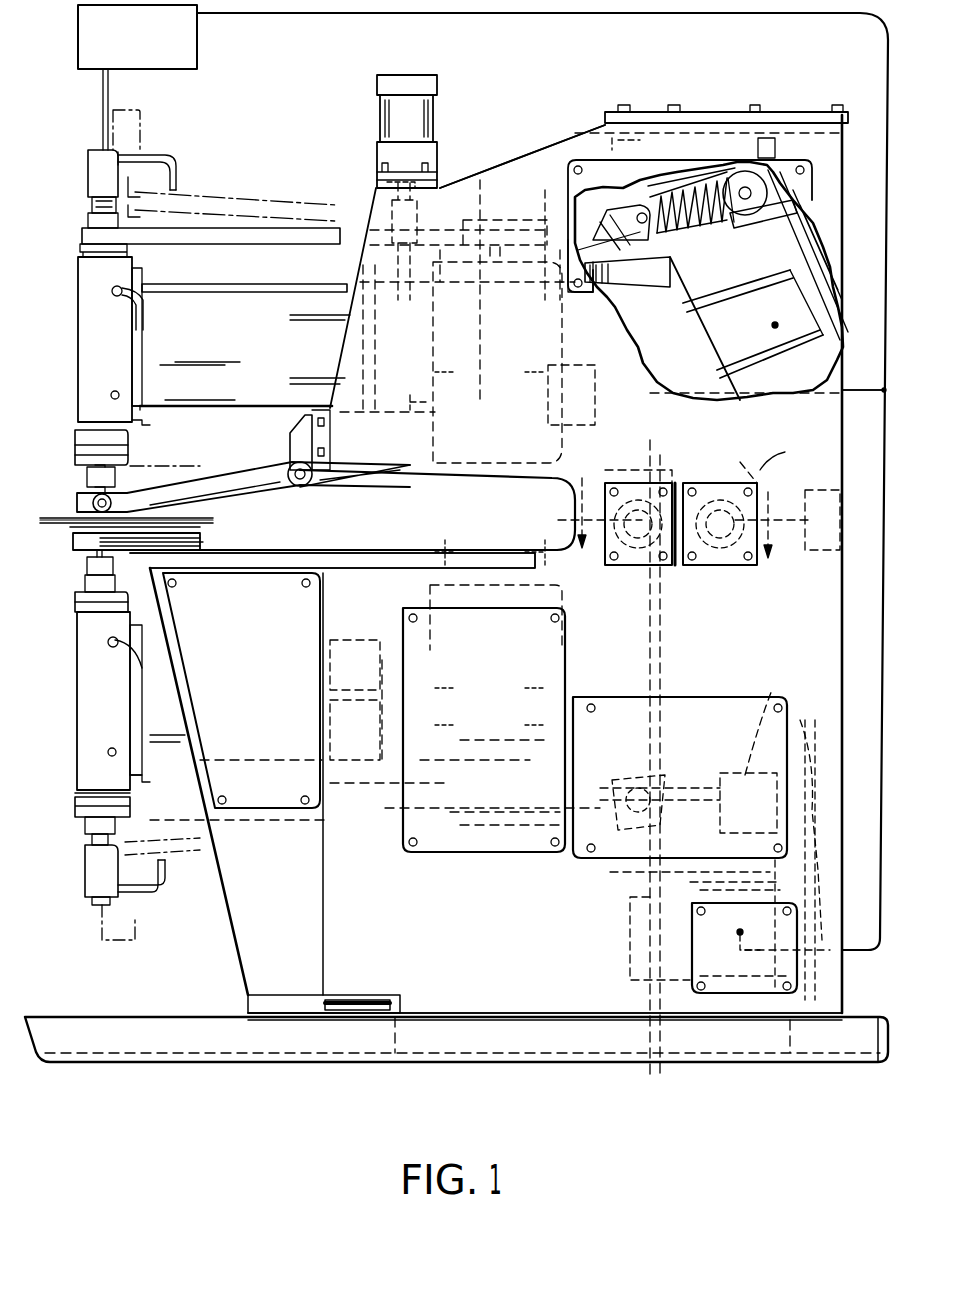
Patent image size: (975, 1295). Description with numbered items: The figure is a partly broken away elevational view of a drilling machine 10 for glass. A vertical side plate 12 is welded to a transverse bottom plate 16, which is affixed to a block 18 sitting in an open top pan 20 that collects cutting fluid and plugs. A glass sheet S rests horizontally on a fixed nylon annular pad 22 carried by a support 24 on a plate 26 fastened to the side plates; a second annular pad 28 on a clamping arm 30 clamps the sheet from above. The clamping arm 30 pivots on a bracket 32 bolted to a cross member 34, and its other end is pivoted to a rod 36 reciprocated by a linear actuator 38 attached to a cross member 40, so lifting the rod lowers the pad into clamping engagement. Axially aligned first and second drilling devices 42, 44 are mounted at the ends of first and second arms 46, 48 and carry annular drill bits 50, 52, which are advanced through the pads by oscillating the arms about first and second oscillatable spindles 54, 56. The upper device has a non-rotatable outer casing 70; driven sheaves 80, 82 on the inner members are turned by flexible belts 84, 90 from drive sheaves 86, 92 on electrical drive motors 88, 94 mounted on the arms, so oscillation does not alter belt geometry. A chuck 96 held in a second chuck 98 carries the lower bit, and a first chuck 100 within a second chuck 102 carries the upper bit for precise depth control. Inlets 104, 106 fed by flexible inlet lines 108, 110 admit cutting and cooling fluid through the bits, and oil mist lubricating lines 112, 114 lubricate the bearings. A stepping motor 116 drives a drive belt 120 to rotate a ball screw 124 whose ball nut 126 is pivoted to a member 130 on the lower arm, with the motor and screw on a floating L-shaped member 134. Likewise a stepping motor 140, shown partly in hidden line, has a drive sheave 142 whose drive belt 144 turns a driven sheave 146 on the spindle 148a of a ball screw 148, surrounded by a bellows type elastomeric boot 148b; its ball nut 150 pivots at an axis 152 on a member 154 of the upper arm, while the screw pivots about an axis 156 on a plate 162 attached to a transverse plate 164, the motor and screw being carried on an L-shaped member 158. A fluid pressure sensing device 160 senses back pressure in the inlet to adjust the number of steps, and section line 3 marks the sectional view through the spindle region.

The drilling machine 10 is at (526, 98).
The first side plate 12 is at (513, 187).
The bottom plate 16 is at (828, 1000).
The block 18 is at (778, 1020).
The open top pan 20 is at (890, 1040).
The annular pad 22 is at (117, 545).
The support 24 is at (205, 548).
The plate 26 is at (396, 555).
The second annular pad 28 is at (192, 521).
The clamping arm 30 is at (162, 490).
The bracket 32 is at (292, 450).
The cross member 34 is at (352, 478).
The rod 36 is at (486, 362).
The linear actuator 38 is at (437, 127).
The cross member 40 is at (377, 183).
The first drilling device 42 is at (88, 272).
The second drilling device 44 is at (78, 676).
The first arm 46 is at (236, 292).
The second arm 48 is at (163, 760).
The drill bit 50 is at (88, 498).
The drill bit 52 is at (86, 562).
The first oscillatable spindle 54 is at (768, 478).
The second oscillatable spindle 56 is at (638, 566).
The outer casing 70 is at (78, 316).
The driven sheave 80 is at (85, 228).
The driven sheave 82 is at (80, 825).
The flexible belt 84 is at (176, 238).
The drive sheave 86 is at (546, 190).
The electrical drive motor 88 is at (565, 312).
The flexible belt 90 is at (150, 805).
The drive sheave 92 is at (528, 812).
The electrical drive motor 94 is at (430, 783).
The chuck 96 is at (85, 580).
The second chuck 98 is at (80, 602).
The first chuck 100 is at (87, 470).
The second chuck 102 is at (85, 445).
The inlet 104 is at (90, 183).
The inlet 106 is at (90, 862).
The flexible inlet line 108 is at (160, 152).
The flexible inlet line 110 is at (150, 893).
The oil mist lubricating line 112 is at (146, 318).
The oil mist lubricating line 114 is at (143, 678).
The stepping motor 116 is at (656, 771).
The drive belt 120 is at (808, 770).
The ball screw 124 is at (771, 713).
The ball nut 126 is at (605, 868).
The member 130 is at (688, 782).
The floating L-shaped member 134 is at (698, 903).
The stepping motor 140 is at (775, 328).
The drive sheave 142 is at (865, 400).
The drive belt 144 is at (795, 243).
The driven sheave 146 is at (812, 188).
The ball screw 148 is at (752, 160).
The spindle 148a is at (752, 170).
The bellows type elastomeric boot 148b is at (696, 205).
The ball nut 150 is at (660, 192).
The axis 152 is at (642, 225).
The member 154 is at (600, 215).
The axis 156 is at (726, 205).
The L-shaped member 158 is at (768, 228).
The fluid pressure sensing device 160 is at (197, 45).
The plate 162 is at (690, 135).
The plate 164 is at (772, 140).
The section line 3 is at (698, 518).
The glass sheet S is at (222, 524).